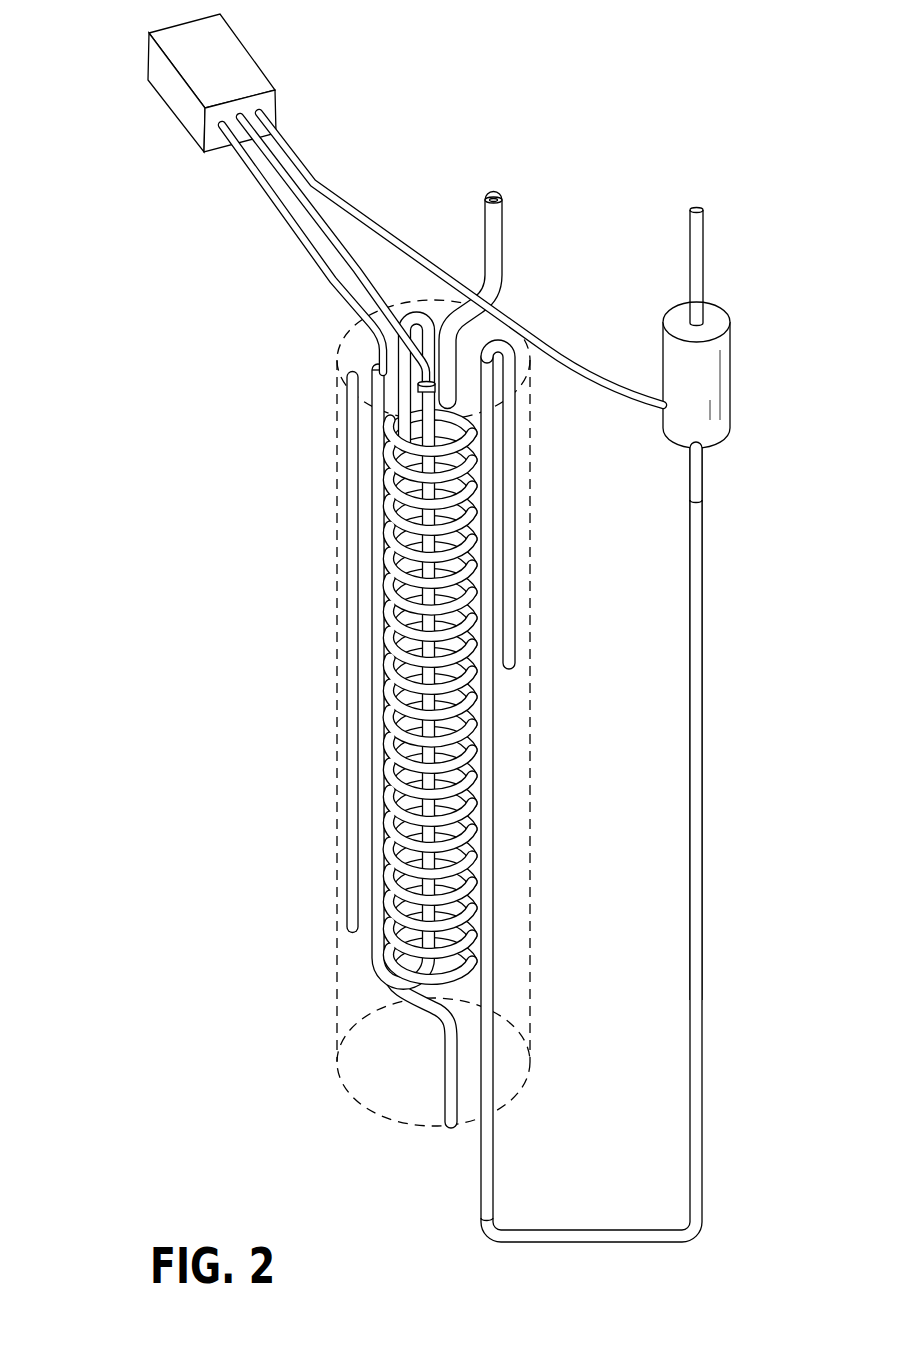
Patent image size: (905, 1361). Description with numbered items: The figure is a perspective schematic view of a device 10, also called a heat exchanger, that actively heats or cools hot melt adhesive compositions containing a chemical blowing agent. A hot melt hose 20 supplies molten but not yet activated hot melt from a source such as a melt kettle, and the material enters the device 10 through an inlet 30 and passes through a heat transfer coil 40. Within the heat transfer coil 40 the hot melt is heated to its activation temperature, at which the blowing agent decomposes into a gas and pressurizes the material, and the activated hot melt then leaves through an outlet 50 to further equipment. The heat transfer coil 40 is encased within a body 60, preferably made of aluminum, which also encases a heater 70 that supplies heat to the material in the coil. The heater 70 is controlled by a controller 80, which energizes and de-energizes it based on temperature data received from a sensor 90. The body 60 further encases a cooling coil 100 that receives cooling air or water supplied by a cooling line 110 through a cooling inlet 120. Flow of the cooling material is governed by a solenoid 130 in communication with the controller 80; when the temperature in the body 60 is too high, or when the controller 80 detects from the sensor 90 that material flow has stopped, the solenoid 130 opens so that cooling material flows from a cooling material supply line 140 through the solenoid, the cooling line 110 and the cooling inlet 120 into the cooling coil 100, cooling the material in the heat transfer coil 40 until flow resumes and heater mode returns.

The device 10 is at (175, 260).
The hot melt hose 20 is at (497, 247).
The inlet 30 is at (452, 400).
The heat transfer coil 40 is at (386, 872).
The outlet 50 is at (451, 1129).
The body 60 is at (340, 690).
The heater 70 is at (421, 398).
The controller 80 is at (255, 76).
The sensor 90 is at (386, 375).
The cooling coil 100 is at (348, 908).
The cooling line 110 is at (700, 480).
The cooling inlet 120 is at (482, 1200).
The solenoid 130 is at (670, 376).
The cooling material supply line 140 is at (698, 262).